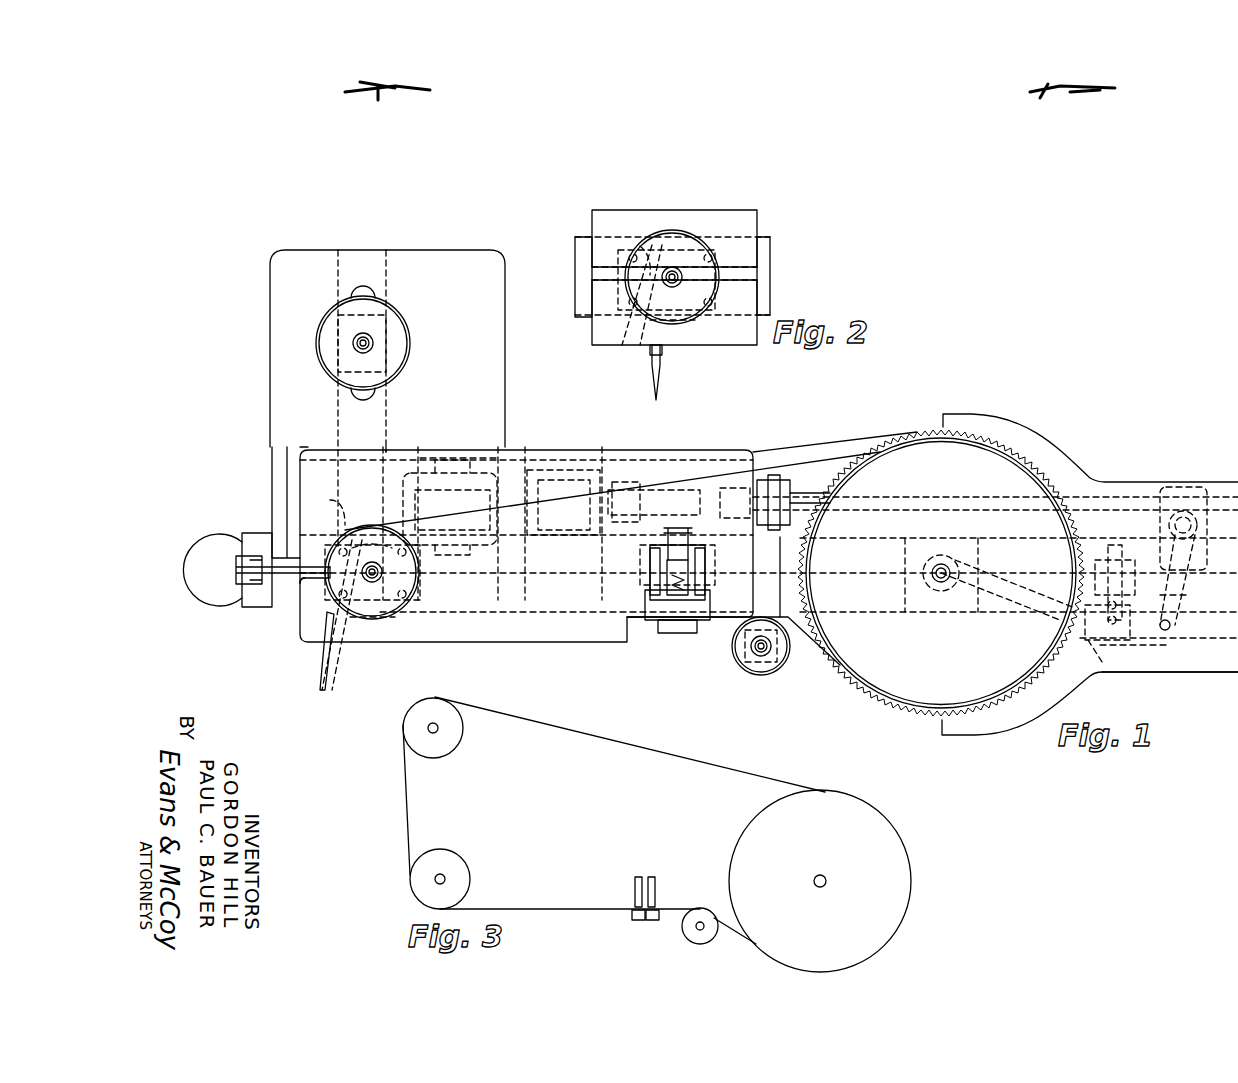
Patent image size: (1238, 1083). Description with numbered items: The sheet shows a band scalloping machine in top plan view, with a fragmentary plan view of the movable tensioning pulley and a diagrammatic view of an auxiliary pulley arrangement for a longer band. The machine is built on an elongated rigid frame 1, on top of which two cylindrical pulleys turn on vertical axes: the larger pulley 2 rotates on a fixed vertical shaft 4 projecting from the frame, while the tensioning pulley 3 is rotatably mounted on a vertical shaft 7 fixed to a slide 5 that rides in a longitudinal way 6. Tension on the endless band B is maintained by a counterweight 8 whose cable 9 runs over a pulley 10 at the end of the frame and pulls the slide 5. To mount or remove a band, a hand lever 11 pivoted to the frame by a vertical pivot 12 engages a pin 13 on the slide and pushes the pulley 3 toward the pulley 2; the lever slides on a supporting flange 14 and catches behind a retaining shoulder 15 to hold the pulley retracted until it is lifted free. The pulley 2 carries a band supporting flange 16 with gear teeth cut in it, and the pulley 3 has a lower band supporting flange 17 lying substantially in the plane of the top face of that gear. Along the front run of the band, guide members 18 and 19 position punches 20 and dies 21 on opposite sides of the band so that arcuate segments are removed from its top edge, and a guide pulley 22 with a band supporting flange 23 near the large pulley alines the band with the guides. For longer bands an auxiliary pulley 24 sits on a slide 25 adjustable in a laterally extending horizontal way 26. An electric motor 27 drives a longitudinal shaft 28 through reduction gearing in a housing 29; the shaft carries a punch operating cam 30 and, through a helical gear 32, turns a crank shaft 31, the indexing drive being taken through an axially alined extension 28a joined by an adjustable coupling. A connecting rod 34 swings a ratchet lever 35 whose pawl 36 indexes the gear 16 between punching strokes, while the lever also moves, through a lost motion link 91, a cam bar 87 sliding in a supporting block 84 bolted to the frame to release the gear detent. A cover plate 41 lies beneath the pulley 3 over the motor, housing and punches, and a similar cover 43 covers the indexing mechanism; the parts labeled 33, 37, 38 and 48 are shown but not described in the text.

In FIG. 1, the frame 1 is at (248, 612).
In FIG. 1, the pulley 2 is at (880, 522).
In FIG. 3, the pulley 2 is at (856, 816).
In FIG. 1, the tensioning pulley 3 is at (360, 525).
In FIG. 3, the tensioning pulley 3 is at (462, 866).
In FIG. 1, the fixed vertical shaft 4 is at (937, 592).
In FIG. 1, the slide 5 is at (330, 556).
In FIG. 2, the slide 5 is at (720, 282).
In FIG. 1, the longitudinal way 6 is at (420, 590).
In FIG. 2, the longitudinal way 6 is at (765, 278).
In FIG. 1, the vertical shaft 7 is at (382, 572).
In FIG. 1, the counterweight 8 is at (222, 540).
In FIG. 1, the cable 9 is at (279, 607).
In FIG. 1, the pulley 10 is at (240, 555).
In FIG. 1, the hand lever 11 is at (318, 650).
In FIG. 2, the hand lever 11 is at (648, 358).
In FIG. 1, the vertical pivot 12 is at (343, 522).
In FIG. 2, the vertical pivot 12 is at (652, 270).
In FIG. 1, the pin 13 is at (336, 584).
In FIG. 2, the pin 13 is at (658, 238).
In FIG. 1, the supporting flange 14 is at (374, 620).
In FIG. 2, the supporting flange 14 is at (672, 322).
In FIG. 1, the retaining shoulder 15 is at (358, 644).
In FIG. 2, the retaining shoulder 15 is at (612, 340).
In FIG. 1, the band supporting flange 16 is at (926, 432).
In FIG. 1, the band supporting flange 17 is at (372, 524).
In FIG. 2, the band supporting flange 17 is at (680, 238).
In FIG. 1, the guide member 18 is at (668, 632).
In FIG. 1, the guide member 19 is at (690, 636).
In FIG. 1, the punches 20 is at (660, 580).
In FIG. 3, the punches 20 is at (633, 890).
In FIG. 3, the dies 21 is at (630, 916).
In FIG. 1, the guide pulley 22 is at (785, 664).
In FIG. 3, the guide pulley 22 is at (700, 946).
In FIG. 1, the band supporting flange 23 is at (752, 672).
In FIG. 1, the auxiliary pulley 24 is at (404, 332).
In FIG. 3, the auxiliary pulley 24 is at (458, 736).
In FIG. 1, the slide 25 is at (345, 382).
In FIG. 1, the horizontal way 26 is at (390, 432).
In FIG. 1, the electric motor 27 is at (409, 436).
In FIG. 1, the longitudinal shaft 28 is at (652, 492).
In FIG. 1, the extension 28a is at (808, 494).
In FIG. 1, the housing 29 is at (590, 475).
In FIG. 1, the punch operating cam 30 is at (692, 470).
In FIG. 1, the crank shaft 31 is at (1205, 520).
In FIG. 1, the helical gear 32 is at (1180, 490).
In FIG. 1, the pivot 33 is at (1199, 572).
In FIG. 1, the connecting rod 34 is at (1176, 598).
In FIG. 1, the ratchet lever 35 is at (1040, 626).
In FIG. 1, the pawl 36 is at (1092, 662).
In FIG. 1, the gear 37 is at (775, 480).
In FIG. 1, the gear 38 is at (792, 480).
In FIG. 1, the cover plate 41 is at (627, 458).
In FIG. 1, the cover 43 is at (1165, 672).
In FIG. 1, the tube 48 is at (668, 536).
In FIG. 1, the supporting block 84 is at (1160, 647).
In FIG. 1, the cam bar 87 is at (1110, 546).
In FIG. 1, the link 91 is at (1110, 640).
In FIG. 1, the endless band B is at (566, 642).
In FIG. 3, the endless band B is at (535, 908).